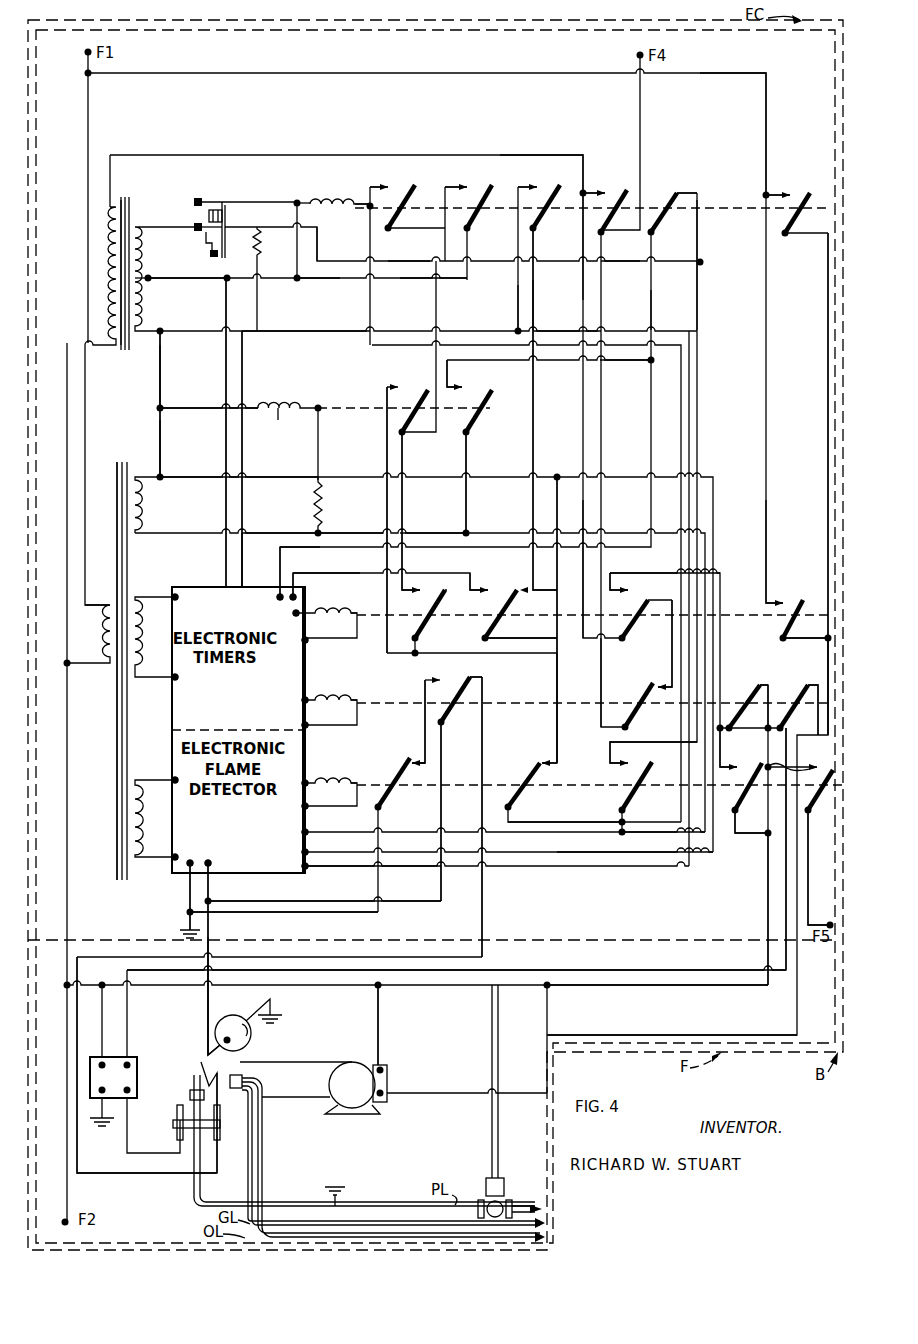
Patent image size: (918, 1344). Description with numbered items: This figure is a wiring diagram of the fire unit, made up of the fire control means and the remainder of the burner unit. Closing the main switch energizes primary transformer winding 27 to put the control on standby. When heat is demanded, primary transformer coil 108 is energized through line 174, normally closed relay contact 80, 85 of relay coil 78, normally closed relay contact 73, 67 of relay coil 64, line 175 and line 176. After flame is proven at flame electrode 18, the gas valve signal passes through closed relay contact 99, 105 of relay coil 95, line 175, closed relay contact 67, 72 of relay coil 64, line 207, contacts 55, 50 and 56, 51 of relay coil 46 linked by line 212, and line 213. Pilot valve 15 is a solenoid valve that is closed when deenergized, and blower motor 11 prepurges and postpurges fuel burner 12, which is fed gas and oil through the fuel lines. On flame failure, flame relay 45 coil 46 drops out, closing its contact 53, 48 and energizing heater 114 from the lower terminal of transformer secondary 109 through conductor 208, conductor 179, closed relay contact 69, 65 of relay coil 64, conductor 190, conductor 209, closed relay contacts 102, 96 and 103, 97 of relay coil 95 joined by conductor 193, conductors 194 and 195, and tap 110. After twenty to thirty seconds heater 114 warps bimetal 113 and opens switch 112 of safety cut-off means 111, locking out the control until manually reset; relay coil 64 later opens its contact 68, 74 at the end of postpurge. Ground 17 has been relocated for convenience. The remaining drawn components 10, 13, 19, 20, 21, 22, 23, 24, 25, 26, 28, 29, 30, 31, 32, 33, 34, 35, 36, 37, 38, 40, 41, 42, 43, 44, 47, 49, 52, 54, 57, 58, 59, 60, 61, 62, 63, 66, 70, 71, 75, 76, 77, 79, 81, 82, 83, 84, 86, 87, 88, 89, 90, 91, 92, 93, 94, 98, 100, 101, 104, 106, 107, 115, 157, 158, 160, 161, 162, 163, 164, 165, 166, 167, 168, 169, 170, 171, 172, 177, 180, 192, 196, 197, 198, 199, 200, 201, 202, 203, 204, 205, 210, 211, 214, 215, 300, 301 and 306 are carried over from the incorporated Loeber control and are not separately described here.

The burner motor unit 10 is at (296, 1030).
The blower motor 11 is at (352, 1062).
The fuel burner 12 is at (231, 1075).
The gas pilot tube 13 is at (196, 1080).
The pilot valve 15 is at (504, 1186).
The ground 17 is at (340, 1196).
The flame electrode 18 is at (220, 1105).
The conductor 19 is at (92, 1173).
The flame rod electrode 20 is at (177, 1115).
The terminal block 21 is at (137, 1078).
The flame detector cell 22 is at (233, 1015).
The conductor 23 is at (208, 1020).
The conductor 24 is at (575, 990).
The electronic flame detector 25 is at (180, 873).
The transformer 26 is at (100, 590).
The primary transformer winding 27 is at (102, 640).
The secondary winding 28 is at (148, 512).
The secondary winding 29 is at (146, 642).
The terminal 30 is at (188, 597).
The terminal 31 is at (178, 680).
The secondary winding 32 is at (146, 812).
The terminal 33 is at (175, 780).
The terminal 34 is at (175, 857).
The terminal 35 is at (192, 885).
The terminal 36 is at (208, 866).
The ground 37 is at (186, 930).
The conductor 38 is at (212, 880).
The terminal 40 is at (305, 783).
The terminal 41 is at (305, 806).
The terminal 42 is at (305, 832).
The terminal 43 is at (305, 852).
The terminal 44 is at (305, 866).
The flame relay 45 is at (366, 766).
The relay coil 46 is at (335, 779).
The relay contact 47 is at (390, 793).
The relay contact 48 is at (515, 793).
The relay contact 49 is at (636, 793).
The relay contact 50 is at (745, 796).
The relay contact 51 is at (812, 793).
The fixed contact 52 is at (414, 762).
The relay contact 53 is at (540, 763).
The fixed contact 54 is at (628, 763).
The relay contact 55 is at (737, 767).
The relay contact 56 is at (817, 767).
The terminal lead 57 is at (226, 590).
The terminal lead 58 is at (242, 590).
The terminal 59 is at (280, 597).
The terminal 60 is at (293, 597).
The terminal 61 is at (300, 616).
The terminal 62 is at (305, 640).
The relay 63 is at (358, 606).
The relay coil 64 is at (330, 610).
The relay contact 65 is at (432, 615).
The relay contact 66 is at (505, 615).
The relay contact 67 is at (622, 638).
The relay contact 68 is at (783, 638).
The relay contact 69 is at (420, 590).
The fixed contact 70 is at (488, 588).
The fixed contact 71 is at (526, 588).
The relay contact 72 is at (628, 590).
The relay contact 73 is at (640, 615).
The relay contact 74 is at (783, 603).
The terminal 75 is at (305, 700).
The terminal 76 is at (305, 725).
The relay 77 is at (365, 690).
The relay coil 78 is at (335, 696).
The relay contact 79 is at (450, 710).
The relay contact 80 is at (644, 715).
The relay contact 81 is at (768, 710).
The relay contact 82 is at (790, 708).
The fixed contact 83 is at (446, 682).
The fixed contact 84 is at (474, 684).
The relay contact 85 is at (670, 680).
The fixed contact 86 is at (766, 684).
The fixed contact 87 is at (808, 684).
The relay coil 88 is at (283, 394).
The relay coil lead 89 is at (280, 412).
The relay contact 90 is at (414, 420).
The relay contact 91 is at (478, 414).
The fixed contact 92 is at (398, 387).
The fixed contact 93 is at (470, 387).
The relay 94 is at (352, 196).
The relay coil 95 is at (328, 200).
The relay contact 96 is at (404, 212).
The relay contact 97 is at (480, 212).
The relay contact 98 is at (549, 212).
The relay contact 99 is at (615, 212).
The relay contact 100 is at (663, 222).
The relay contact 101 is at (797, 216).
The relay contact 102 is at (388, 187).
The relay contact 103 is at (467, 187).
The fixed contact 104 is at (537, 187).
The relay contact 105 is at (605, 193).
The fixed contact 106 is at (688, 181).
The transformer core 107 is at (128, 205).
The primary transformer coil 108 is at (100, 240).
The transformer secondary 109 is at (146, 258).
The tap 110 is at (148, 278).
The safety cut-off means 111 is at (240, 192).
The switch 112 is at (236, 215).
The bimetal 113 is at (218, 238).
The heater 114 is at (259, 243).
The contact 115 is at (194, 211).
The conductor 157 is at (204, 477).
The conductor 158 is at (560, 477).
The conductor 160 is at (605, 852).
The conductor 161 is at (665, 832).
The conductor 162 is at (436, 533).
The conductor 163 is at (282, 533).
The conductor 164 is at (160, 450).
The conductor 165 is at (338, 334).
The conductor 166 is at (570, 332).
The resistor 167 is at (326, 512).
The conductor 168 is at (364, 868).
The conductor 169 is at (697, 232).
The conductor 170 is at (651, 306).
The conductor 171 is at (638, 362).
The conductor 172 is at (468, 458).
The line 174 is at (604, 261).
The line 175 is at (588, 600).
The line 176 is at (580, 155).
The conductor 177 is at (295, 203).
The conductor 179 is at (412, 280).
The conductor 180 is at (385, 528).
The conductor 190 is at (520, 660).
The conductor 192 is at (160, 370).
The conductor 193 is at (408, 261).
The conductor 194 is at (318, 284).
The conductor 195 is at (208, 280).
The conductor 196 is at (226, 405).
The conductor 197 is at (242, 558).
The conductor 198 is at (712, 73).
The conductor 199 is at (828, 300).
The conductor 200 is at (828, 640).
The conductor 201 is at (378, 990).
The conductor 202 is at (700, 272).
The conductor 203 is at (518, 305).
The conductor 204 is at (533, 285).
The conductor 205 is at (546, 604).
The line 207 is at (662, 573).
The conductor 208 is at (206, 334).
The conductor 209 is at (600, 822).
The conductor 210 is at (441, 790).
The conductor 211 is at (306, 912).
The line 212 is at (760, 824).
The line 213 is at (810, 915).
The conductor 214 is at (348, 573).
The conductor 215 is at (330, 548).
The conductor 300 is at (370, 255).
The conductor 301 is at (680, 970).
The fixed contact 306 is at (790, 195).